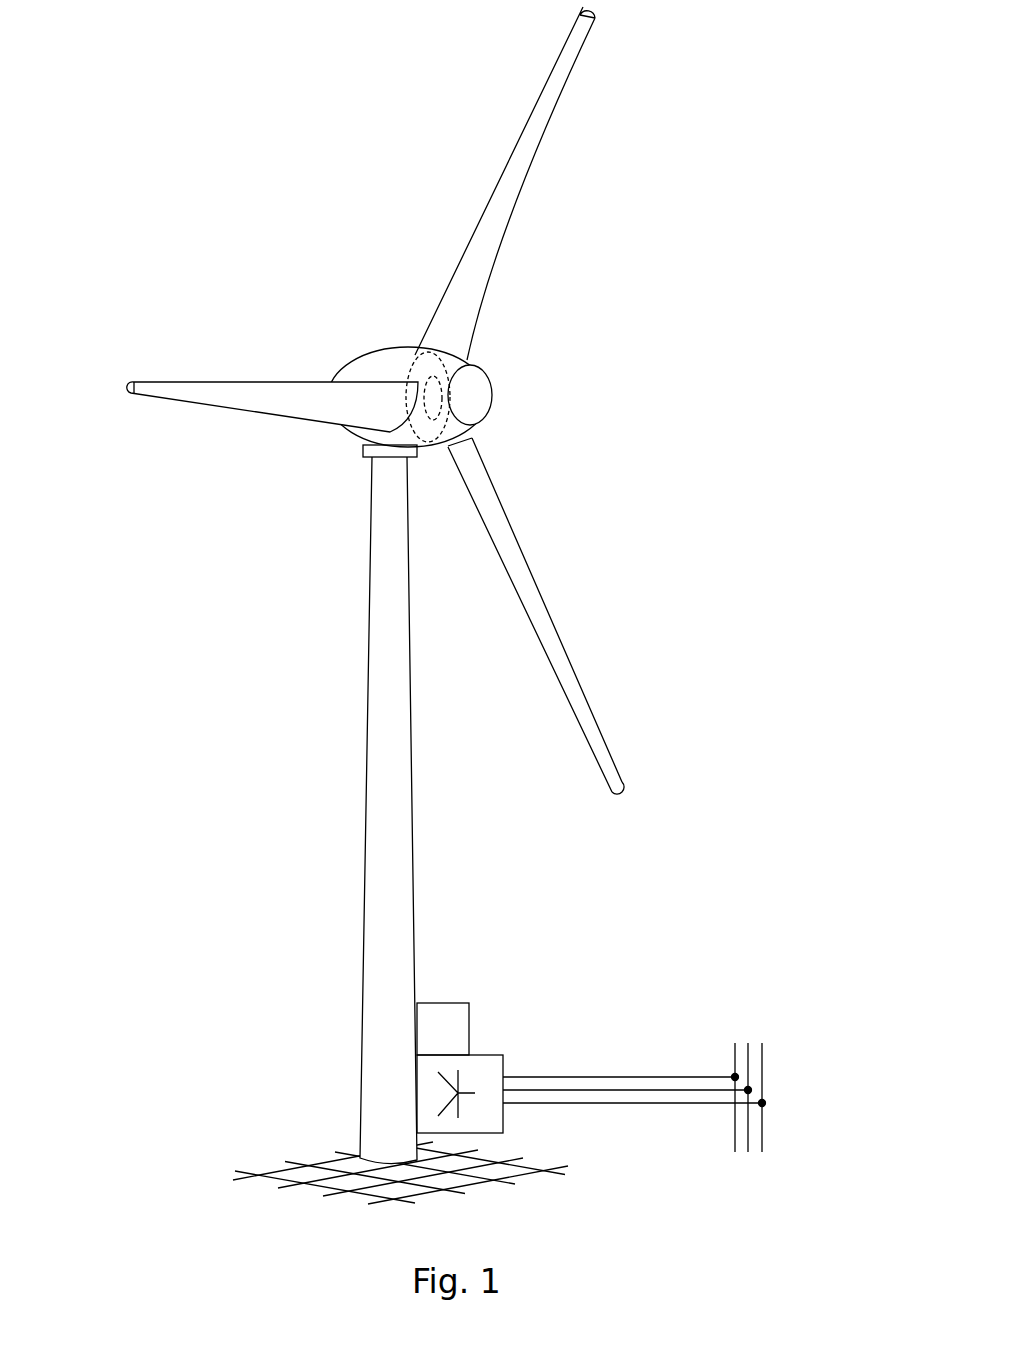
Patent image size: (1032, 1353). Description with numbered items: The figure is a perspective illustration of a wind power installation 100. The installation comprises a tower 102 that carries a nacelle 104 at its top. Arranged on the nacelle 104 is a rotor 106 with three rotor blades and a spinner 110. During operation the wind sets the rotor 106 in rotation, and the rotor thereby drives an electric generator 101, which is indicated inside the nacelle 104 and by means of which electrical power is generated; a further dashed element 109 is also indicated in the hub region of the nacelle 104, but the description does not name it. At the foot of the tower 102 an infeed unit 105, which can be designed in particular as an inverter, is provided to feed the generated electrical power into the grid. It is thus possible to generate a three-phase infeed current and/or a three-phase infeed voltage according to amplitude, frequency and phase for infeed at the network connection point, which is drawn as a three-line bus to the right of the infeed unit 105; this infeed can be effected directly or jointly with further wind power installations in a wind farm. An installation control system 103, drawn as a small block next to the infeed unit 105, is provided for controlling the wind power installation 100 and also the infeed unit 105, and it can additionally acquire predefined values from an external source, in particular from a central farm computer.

The wind power installation 100 is at (323, 528).
The electric generator 101 is at (437, 365).
The tower 102 is at (402, 892).
The installation control system 103 is at (465, 1022).
The nacelle 104 is at (373, 372).
The infeed unit 105 is at (503, 1122).
The rotor 106 is at (563, 313).
The pitch bearing 109 is at (450, 440).
The spinner 110 is at (477, 392).